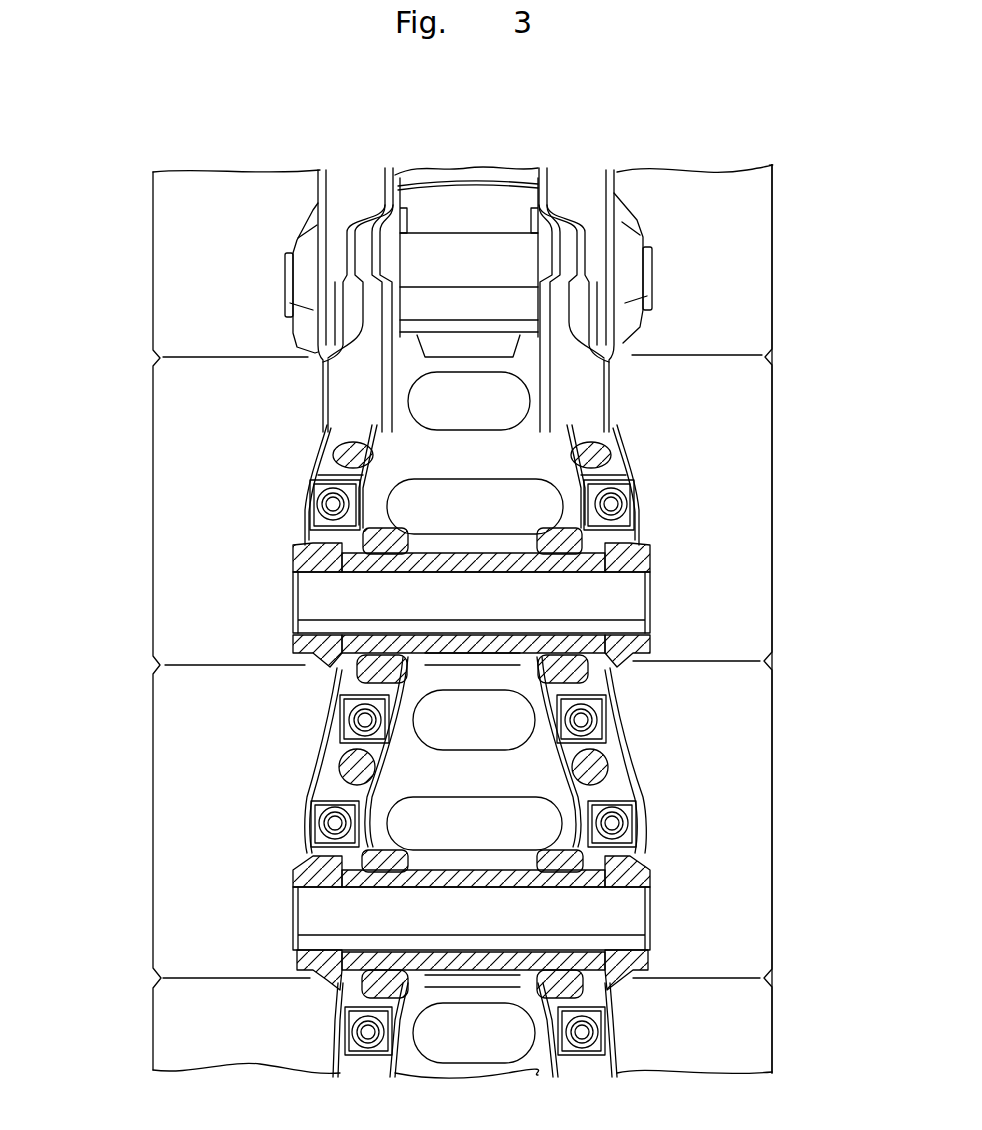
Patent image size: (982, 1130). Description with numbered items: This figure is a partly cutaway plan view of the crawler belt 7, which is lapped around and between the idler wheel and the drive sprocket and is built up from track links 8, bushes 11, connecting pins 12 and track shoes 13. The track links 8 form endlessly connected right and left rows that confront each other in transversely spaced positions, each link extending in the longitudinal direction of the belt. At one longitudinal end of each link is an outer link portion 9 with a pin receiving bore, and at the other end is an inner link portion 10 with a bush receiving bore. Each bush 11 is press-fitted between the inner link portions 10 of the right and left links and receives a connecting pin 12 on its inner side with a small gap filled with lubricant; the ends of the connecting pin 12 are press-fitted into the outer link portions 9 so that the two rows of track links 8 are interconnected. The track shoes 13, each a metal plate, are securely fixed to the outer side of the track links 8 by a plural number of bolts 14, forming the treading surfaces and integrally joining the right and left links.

The crawler belt 7 is at (789, 359).
The track link 8 is at (308, 190).
The outer link portion 9 is at (307, 283).
The inner link portion 10 is at (815, 196).
The bush 11 is at (812, 1023).
The connecting pin 12 is at (812, 912).
The track shoe 13 is at (812, 418).
The bolt 14 is at (812, 477).